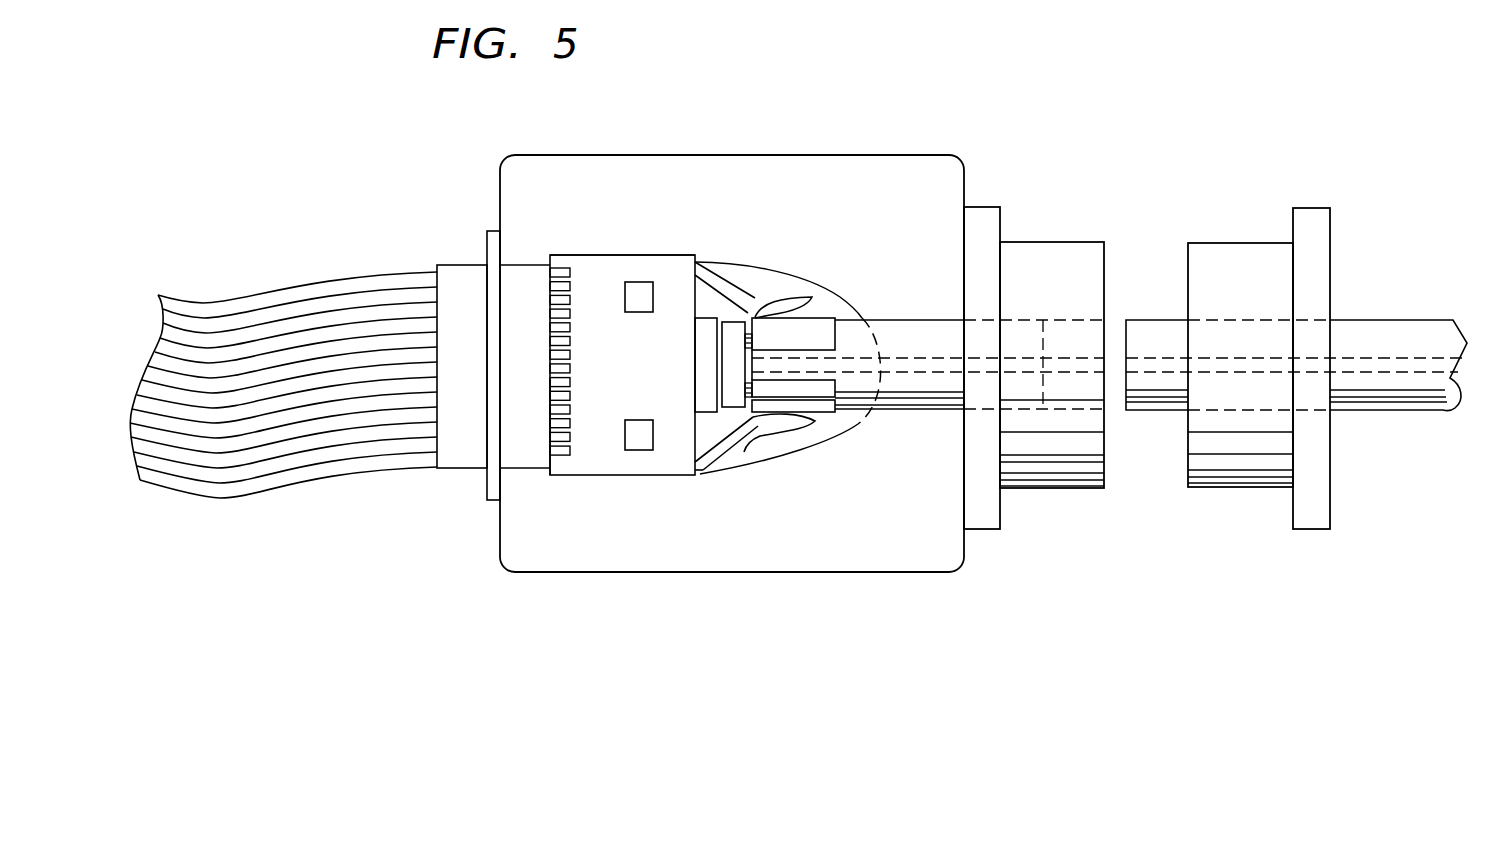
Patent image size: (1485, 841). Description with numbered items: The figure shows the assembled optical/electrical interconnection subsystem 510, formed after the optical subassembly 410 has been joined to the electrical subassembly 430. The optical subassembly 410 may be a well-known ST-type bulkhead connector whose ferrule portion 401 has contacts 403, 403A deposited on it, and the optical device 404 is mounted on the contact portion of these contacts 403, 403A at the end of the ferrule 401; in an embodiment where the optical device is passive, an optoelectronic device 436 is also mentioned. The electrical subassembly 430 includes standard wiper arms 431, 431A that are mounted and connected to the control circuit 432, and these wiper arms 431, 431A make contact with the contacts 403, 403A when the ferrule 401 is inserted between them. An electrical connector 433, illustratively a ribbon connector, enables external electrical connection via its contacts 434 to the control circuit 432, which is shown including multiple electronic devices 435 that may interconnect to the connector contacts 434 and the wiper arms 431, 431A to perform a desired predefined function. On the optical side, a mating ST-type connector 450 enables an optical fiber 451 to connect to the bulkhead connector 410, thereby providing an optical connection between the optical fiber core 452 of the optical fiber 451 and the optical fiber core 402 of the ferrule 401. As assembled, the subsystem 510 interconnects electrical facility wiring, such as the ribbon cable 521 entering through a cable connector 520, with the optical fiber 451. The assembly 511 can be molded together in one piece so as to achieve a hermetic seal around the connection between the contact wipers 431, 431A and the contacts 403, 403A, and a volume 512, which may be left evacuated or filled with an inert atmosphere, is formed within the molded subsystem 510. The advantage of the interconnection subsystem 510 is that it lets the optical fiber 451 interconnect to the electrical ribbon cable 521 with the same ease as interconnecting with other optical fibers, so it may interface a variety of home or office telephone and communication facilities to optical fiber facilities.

The ferrule portion 401 is at (937, 320).
The optical fiber core 402 is at (897, 370).
The contact 403 is at (827, 320).
The contact 403A is at (827, 410).
The optical device 404 is at (743, 322).
The optical subassembly 410 is at (990, 213).
The electrical subassembly 430 is at (647, 195).
The wiper arm 431 is at (740, 330).
The wiper arm 431A is at (745, 440).
The control circuit 432 is at (577, 252).
The electrical connector 433 is at (527, 460).
The contacts 434 is at (573, 267).
The electronic devices 435 is at (640, 284).
The optoelectronic device 436 is at (705, 327).
The mating ST-type connector 450 is at (1310, 220).
The optical fiber 451 is at (1402, 327).
The optical fiber core 452 is at (1380, 367).
The interconnection subsystem 510 is at (616, 578).
The assembly 511 is at (733, 575).
The volume 512 is at (777, 452).
The cable connector 520 is at (460, 267).
The ribbon cable 521 is at (270, 305).